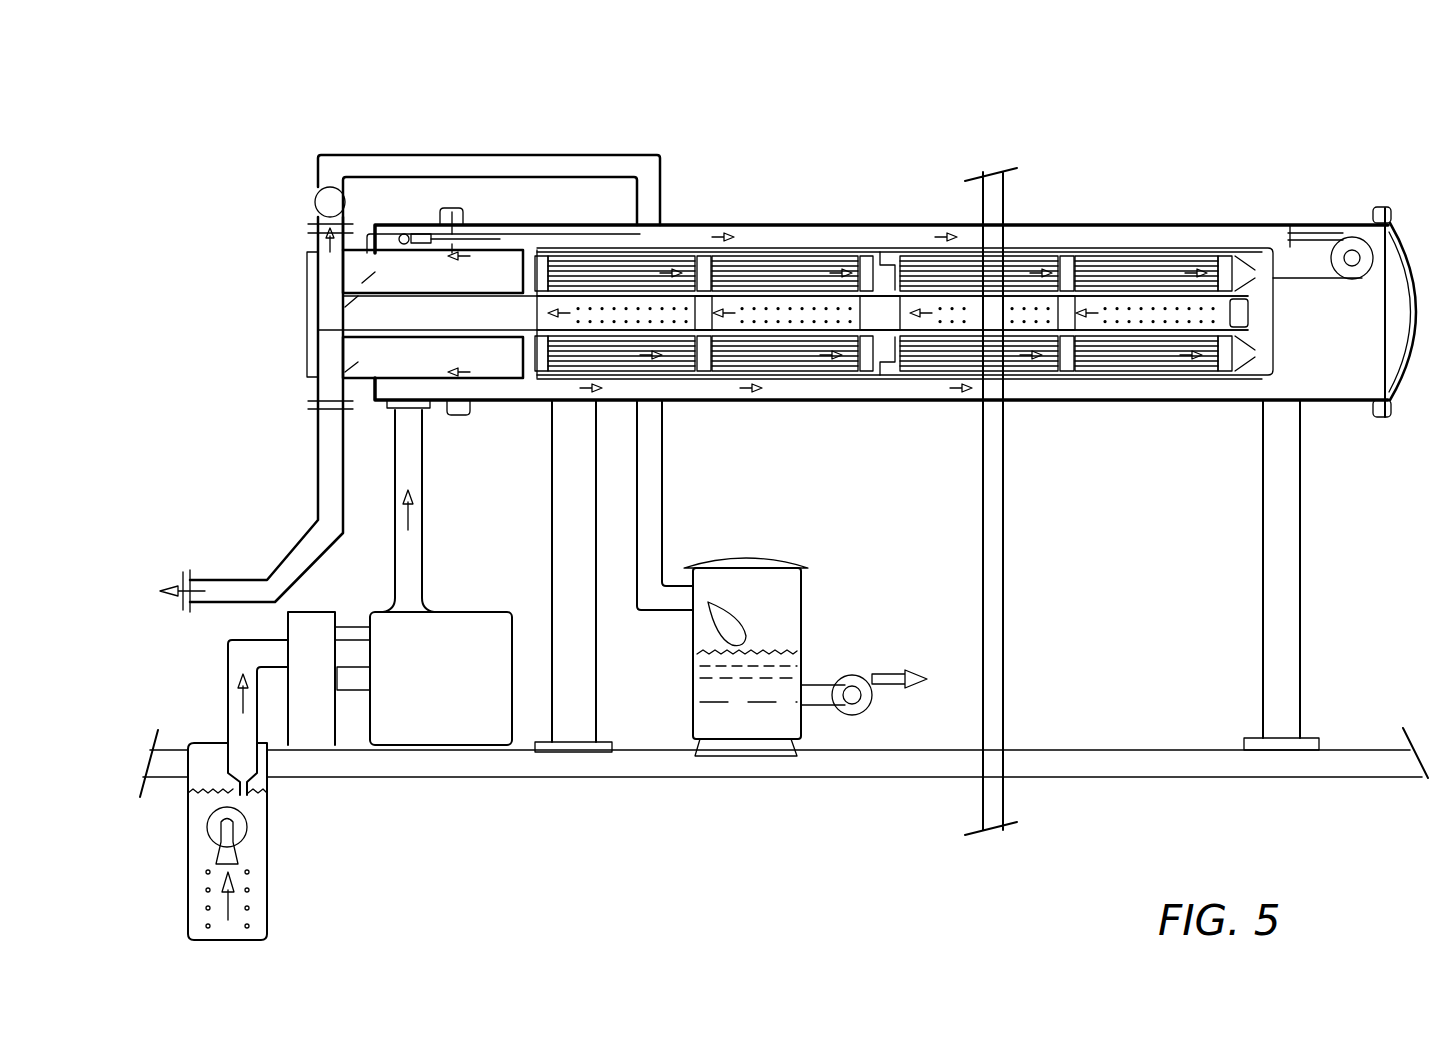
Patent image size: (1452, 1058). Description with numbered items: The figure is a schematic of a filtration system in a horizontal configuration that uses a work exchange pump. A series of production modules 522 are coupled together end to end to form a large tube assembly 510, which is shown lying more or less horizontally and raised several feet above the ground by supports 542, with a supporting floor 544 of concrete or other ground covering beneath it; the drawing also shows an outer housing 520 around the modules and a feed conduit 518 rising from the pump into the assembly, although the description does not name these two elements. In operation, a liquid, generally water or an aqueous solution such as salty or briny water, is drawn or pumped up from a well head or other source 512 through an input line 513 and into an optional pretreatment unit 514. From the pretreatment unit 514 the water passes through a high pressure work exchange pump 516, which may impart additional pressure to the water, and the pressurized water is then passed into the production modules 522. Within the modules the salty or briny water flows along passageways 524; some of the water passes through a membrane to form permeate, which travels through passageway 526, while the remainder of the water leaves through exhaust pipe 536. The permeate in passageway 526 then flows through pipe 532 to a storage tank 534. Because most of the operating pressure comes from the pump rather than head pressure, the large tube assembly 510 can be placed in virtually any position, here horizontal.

The large tube assembly 510 is at (878, 447).
The well head or other source 512 is at (205, 740).
The input line 513 is at (227, 653).
The pretreatment unit 514 is at (313, 730).
The high pressure work exchange pump 516 is at (476, 612).
The feed conduit 518 is at (423, 455).
The housing 520 is at (1105, 222).
The production modules 522 is at (668, 227).
The passageways 524 is at (1076, 382).
The passageway 526 is at (1172, 322).
The pipe 532 is at (430, 153).
The storage tank 534 is at (778, 556).
The exhaust pipe 536 is at (318, 465).
The supports 542 is at (595, 634).
The supporting floor 544 is at (1358, 748).